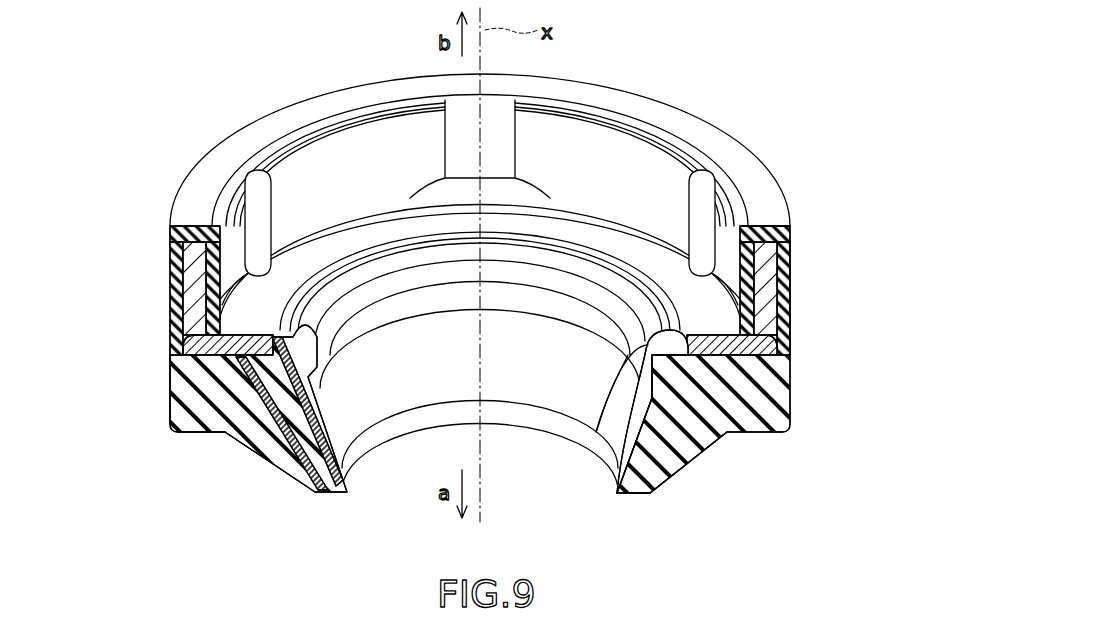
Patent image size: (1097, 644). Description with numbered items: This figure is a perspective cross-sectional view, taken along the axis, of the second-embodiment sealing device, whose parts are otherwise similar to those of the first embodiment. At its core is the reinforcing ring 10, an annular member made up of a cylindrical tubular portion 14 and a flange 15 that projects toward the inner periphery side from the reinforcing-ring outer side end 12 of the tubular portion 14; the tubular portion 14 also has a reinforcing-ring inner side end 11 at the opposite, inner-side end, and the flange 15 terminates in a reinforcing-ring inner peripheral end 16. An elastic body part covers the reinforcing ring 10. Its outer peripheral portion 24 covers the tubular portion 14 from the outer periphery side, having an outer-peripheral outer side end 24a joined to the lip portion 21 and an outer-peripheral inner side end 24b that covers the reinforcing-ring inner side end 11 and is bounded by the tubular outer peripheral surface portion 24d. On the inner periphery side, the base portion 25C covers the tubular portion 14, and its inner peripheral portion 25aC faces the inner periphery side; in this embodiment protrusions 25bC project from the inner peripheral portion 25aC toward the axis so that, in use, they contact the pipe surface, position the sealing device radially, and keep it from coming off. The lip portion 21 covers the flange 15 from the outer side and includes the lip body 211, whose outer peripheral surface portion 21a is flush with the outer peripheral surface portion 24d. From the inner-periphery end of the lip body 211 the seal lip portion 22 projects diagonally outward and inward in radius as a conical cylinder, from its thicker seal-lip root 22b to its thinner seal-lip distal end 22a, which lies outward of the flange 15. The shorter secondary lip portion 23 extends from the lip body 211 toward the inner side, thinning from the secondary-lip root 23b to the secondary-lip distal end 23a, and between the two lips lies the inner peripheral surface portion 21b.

The reinforcing ring 10 is at (150, 172).
The reinforcing-ring inner side end 11 is at (183, 232).
The reinforcing-ring outer side end 12 is at (192, 345).
The tubular portion 14 is at (190, 297).
The flange 15 is at (247, 366).
The reinforcing-ring inner peripheral end 16 is at (265, 350).
The lip portion 21 is at (152, 450).
The outer peripheral surface portion 21a is at (170, 392).
The inner peripheral surface portion 21b is at (353, 413).
The lip body 211 is at (192, 405).
The seal lip portion 22 is at (742, 524).
The seal-lip distal end 22a is at (628, 495).
The seal-lip root 22b is at (707, 435).
The secondary lip portion 23 is at (617, 445).
The secondary-lip distal end 23a is at (596, 430).
The secondary-lip root 23b is at (614, 470).
The outer peripheral portion 24 is at (546, 259).
The outer-peripheral outer side end 24a is at (775, 350).
The outer-peripheral inner side end 24b is at (790, 232).
The outer peripheral surface portion 24d is at (790, 298).
The base portion 25C is at (588, 140).
The inner peripheral portion 25aC is at (612, 138).
The protrusions 25bC is at (262, 212).